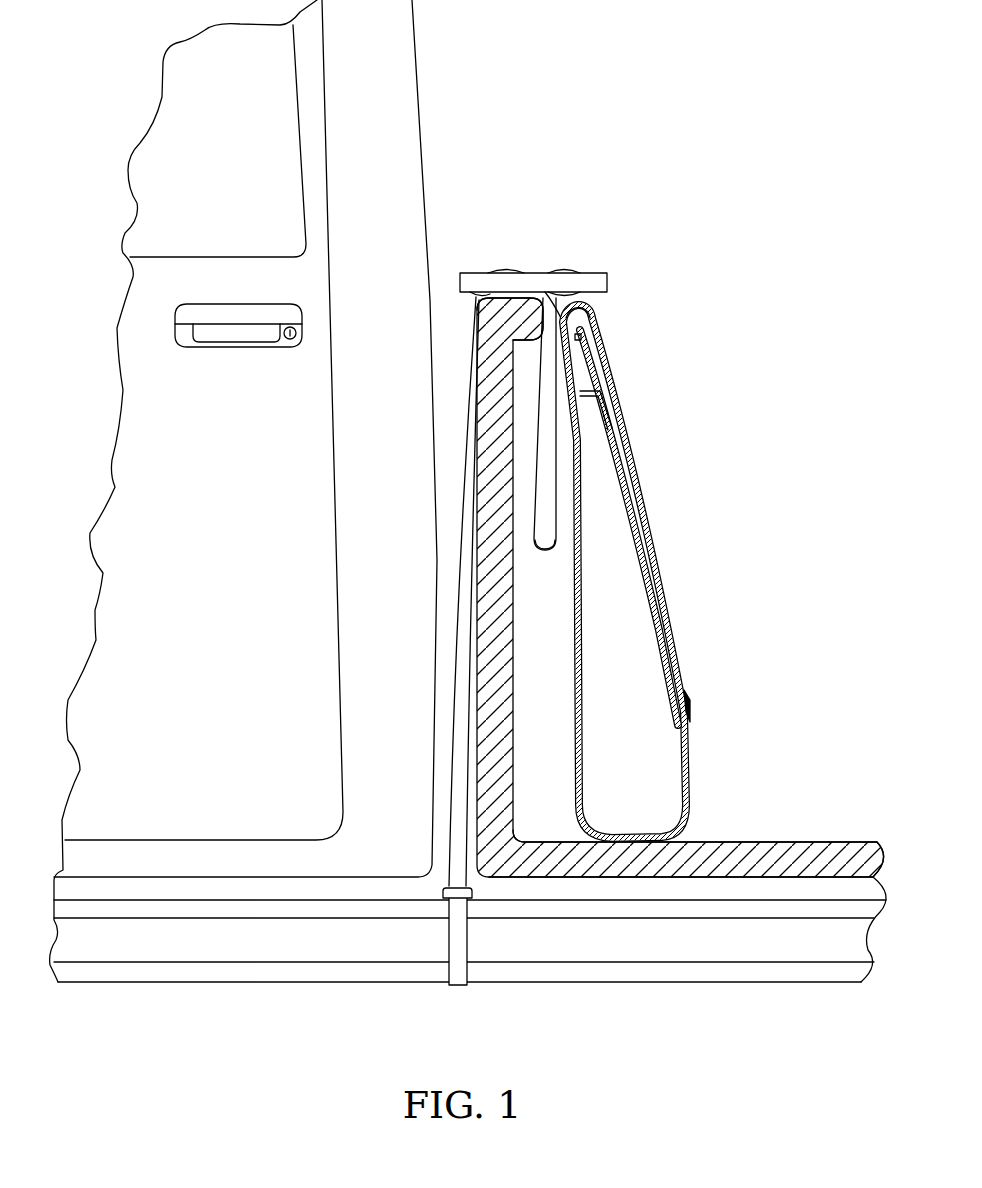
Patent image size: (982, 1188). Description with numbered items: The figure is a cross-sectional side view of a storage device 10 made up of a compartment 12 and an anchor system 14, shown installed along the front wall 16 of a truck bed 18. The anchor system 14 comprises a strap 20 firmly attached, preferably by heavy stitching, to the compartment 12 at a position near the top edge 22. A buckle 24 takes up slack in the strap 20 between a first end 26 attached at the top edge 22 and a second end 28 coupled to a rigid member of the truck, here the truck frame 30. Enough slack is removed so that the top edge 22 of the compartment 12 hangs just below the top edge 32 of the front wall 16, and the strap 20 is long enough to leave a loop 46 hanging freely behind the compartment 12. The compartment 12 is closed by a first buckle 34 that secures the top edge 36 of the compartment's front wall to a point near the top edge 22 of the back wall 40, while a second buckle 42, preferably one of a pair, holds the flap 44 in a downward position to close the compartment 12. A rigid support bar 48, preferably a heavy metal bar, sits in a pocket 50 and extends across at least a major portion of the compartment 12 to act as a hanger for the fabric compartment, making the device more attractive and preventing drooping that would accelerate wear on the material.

The storage device 10 is at (669, 150).
The compartment 12 is at (568, 571).
The anchor system 14 is at (441, 264).
The front wall 16 is at (625, 587).
The truck bed 18 is at (812, 842).
The strap 20 is at (452, 700).
The top edge 22 is at (563, 320).
The buckle 24 is at (608, 282).
The first end 26 is at (541, 453).
The second end 28 is at (449, 987).
The truck frame 30 is at (558, 984).
The top edge 32 is at (500, 326).
The first buckle 34 is at (601, 394).
The top edge 36 is at (627, 446).
The back wall 40 is at (575, 612).
The second buckle 42 is at (694, 700).
The flap 44 is at (652, 532).
The loop 46 is at (543, 542).
The rigid support bar 48 is at (582, 338).
The pocket 50 is at (588, 322).